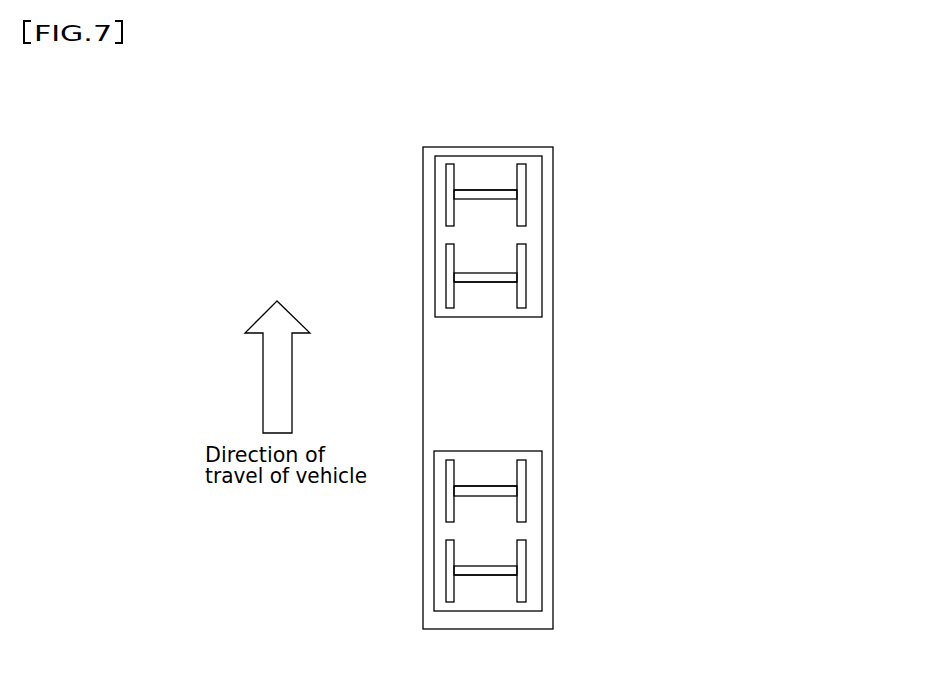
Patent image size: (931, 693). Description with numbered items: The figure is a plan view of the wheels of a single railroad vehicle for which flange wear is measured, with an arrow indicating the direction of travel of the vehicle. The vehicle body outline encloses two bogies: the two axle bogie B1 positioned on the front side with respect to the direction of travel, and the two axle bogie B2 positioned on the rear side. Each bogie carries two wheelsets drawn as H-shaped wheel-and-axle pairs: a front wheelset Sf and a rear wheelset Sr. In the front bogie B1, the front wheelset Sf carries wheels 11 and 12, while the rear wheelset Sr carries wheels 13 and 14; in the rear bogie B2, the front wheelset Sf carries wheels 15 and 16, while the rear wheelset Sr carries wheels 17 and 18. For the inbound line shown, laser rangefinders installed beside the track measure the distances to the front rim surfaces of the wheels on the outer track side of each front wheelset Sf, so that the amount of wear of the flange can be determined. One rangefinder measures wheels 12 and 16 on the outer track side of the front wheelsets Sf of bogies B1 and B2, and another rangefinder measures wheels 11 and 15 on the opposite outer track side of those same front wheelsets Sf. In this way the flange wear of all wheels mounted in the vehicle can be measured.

The wheel 11 is at (522, 177).
The wheel 12 is at (447, 175).
The battery cell 1_3 13 is at (522, 258).
The battery cell 1_4 14 is at (447, 256).
The wheel 15 is at (522, 472).
The wheel 16 is at (447, 506).
The battery cell 1_7 17 is at (522, 553).
The battery cell 1_8 18 is at (447, 588).
The two axle bogie B1 is at (505, 165).
The two axle bogie B2 is at (507, 468).
The front wheelset Sf is at (486, 189).
The rear wheelset Sr is at (485, 283).